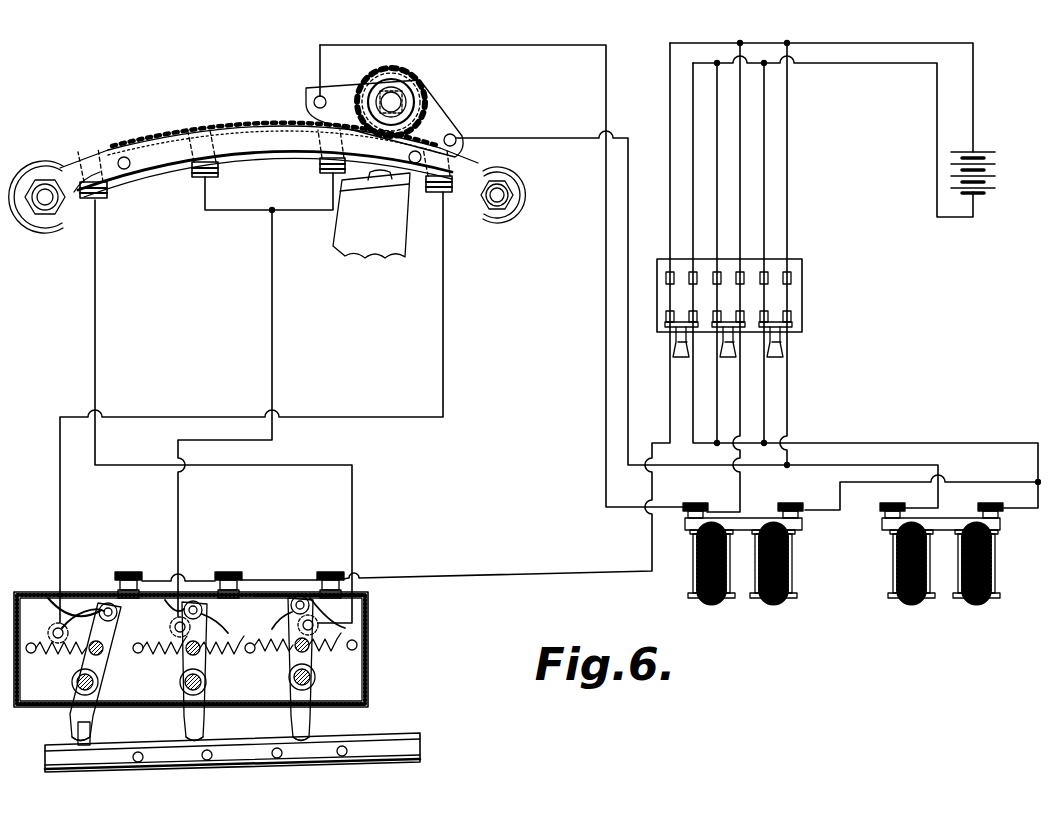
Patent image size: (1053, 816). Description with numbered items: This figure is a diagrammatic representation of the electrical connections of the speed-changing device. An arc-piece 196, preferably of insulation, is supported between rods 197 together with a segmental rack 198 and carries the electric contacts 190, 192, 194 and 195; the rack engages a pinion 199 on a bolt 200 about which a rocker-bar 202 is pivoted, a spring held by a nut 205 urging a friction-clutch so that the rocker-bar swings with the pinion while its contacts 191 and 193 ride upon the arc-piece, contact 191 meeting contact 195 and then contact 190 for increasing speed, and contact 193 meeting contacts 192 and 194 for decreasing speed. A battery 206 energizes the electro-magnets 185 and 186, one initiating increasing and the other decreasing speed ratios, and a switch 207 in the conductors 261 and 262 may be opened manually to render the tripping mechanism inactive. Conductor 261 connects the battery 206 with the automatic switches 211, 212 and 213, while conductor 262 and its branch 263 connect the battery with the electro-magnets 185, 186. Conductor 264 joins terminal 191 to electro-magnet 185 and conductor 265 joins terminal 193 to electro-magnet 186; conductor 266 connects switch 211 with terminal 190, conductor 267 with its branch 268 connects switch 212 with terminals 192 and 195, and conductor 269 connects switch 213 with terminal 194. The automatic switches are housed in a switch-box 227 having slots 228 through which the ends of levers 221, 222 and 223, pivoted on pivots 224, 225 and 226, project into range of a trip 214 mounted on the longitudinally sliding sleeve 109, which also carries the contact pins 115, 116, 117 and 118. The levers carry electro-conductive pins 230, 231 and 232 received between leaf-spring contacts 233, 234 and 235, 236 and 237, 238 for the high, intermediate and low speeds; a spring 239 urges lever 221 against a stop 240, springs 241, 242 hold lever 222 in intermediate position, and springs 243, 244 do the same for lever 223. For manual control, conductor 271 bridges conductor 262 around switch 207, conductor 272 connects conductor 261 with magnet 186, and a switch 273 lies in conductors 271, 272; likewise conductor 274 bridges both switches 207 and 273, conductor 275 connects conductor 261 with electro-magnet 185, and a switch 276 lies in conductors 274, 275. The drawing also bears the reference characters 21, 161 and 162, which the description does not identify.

The support block 21 is at (418, 242).
The sleeve 109 is at (406, 734).
The pin 115 is at (144, 757).
The pin 116 is at (211, 753).
The pin 117 is at (277, 749).
The pin 118 is at (345, 748).
The hole 161 is at (416, 164).
The hole 162 is at (124, 156).
The electro-magnet 185 is at (895, 553).
The electro-magnet 186 is at (796, 558).
The electric contact 190 is at (445, 196).
The electric contact 191 is at (458, 139).
The electric contact 192 is at (200, 180).
The electric contact 193 is at (308, 108).
The electric contact 194 is at (117, 172).
The contact 195 is at (320, 176).
The arc-piece 196 is at (260, 150).
The rods 197 is at (48, 206).
The segmental rack 198 is at (167, 140).
The pinion 199 is at (412, 76).
The bolt 200 is at (410, 99).
The rocker-bar 202 is at (454, 114).
The nut 205 is at (430, 105).
The battery 206 is at (982, 200).
The switch 207 is at (668, 306).
The automatic switch 211 is at (128, 610).
The automatic switch 212 is at (214, 607).
The automatic switch 213 is at (319, 605).
The trip 214 is at (90, 730).
The lever 221 is at (66, 706).
The lever 222 is at (184, 693).
The lever 223 is at (292, 693).
The pivot 224 is at (72, 682).
The pivot 225 is at (180, 682).
The pivot 226 is at (289, 678).
The switch-box 227 is at (370, 661).
The slots 228 is at (136, 746).
The contact-pin 230 is at (106, 598).
The contact-pin 231 is at (202, 598).
The contact-pin 232 is at (304, 598).
The leaf-spring contact 233 is at (54, 622).
The leaf-spring contact 234 is at (70, 592).
The leaf-spring contact 235 is at (209, 617).
The leaf-spring contact 236 is at (186, 580).
The leaf-spring contact 237 is at (325, 627).
The leaf-spring contact 238 is at (289, 592).
The spring 239 is at (42, 605).
The stop 240 is at (64, 656).
The spring 241 is at (159, 655).
The spring 242 is at (227, 652).
The spring 243 is at (277, 653).
The spring 244 is at (333, 648).
The electric conductor 261 is at (833, 43).
The electric conductor 262 is at (848, 63).
The branch 263 is at (968, 483).
The electric conductor 264 is at (627, 310).
The electric conductor 265 is at (527, 44).
The electric conductor 266 is at (444, 376).
The electric conductor 267 is at (205, 213).
The branch 268 is at (284, 215).
The electric conductor 269 is at (97, 345).
The electric conductor 271 is at (716, 148).
The electric conductor 272 is at (741, 200).
The switch 273 is at (742, 260).
The electric conductor 274 is at (766, 147).
The electric conductor 275 is at (788, 229).
The switch 276 is at (792, 301).